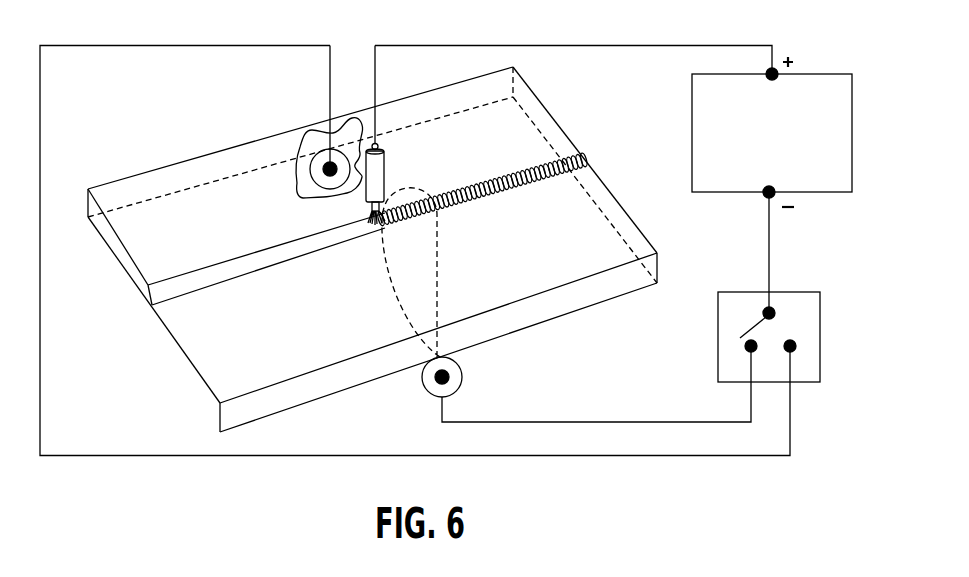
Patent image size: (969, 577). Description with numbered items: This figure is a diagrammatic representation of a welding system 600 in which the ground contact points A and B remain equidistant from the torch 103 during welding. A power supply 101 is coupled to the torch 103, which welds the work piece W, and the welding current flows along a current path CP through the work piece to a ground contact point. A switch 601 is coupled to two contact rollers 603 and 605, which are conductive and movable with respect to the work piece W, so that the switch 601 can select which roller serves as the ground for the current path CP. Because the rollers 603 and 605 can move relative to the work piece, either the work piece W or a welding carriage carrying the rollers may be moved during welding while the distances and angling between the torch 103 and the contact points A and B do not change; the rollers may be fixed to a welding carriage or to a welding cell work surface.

The welding system 600 is at (158, 477).
The power supply 101 is at (814, 74).
The torch 103 is at (383, 172).
The switch 601 is at (820, 367).
The contact roller 603 is at (462, 378).
The contact roller 605 is at (320, 160).
The current path CP is at (437, 277).